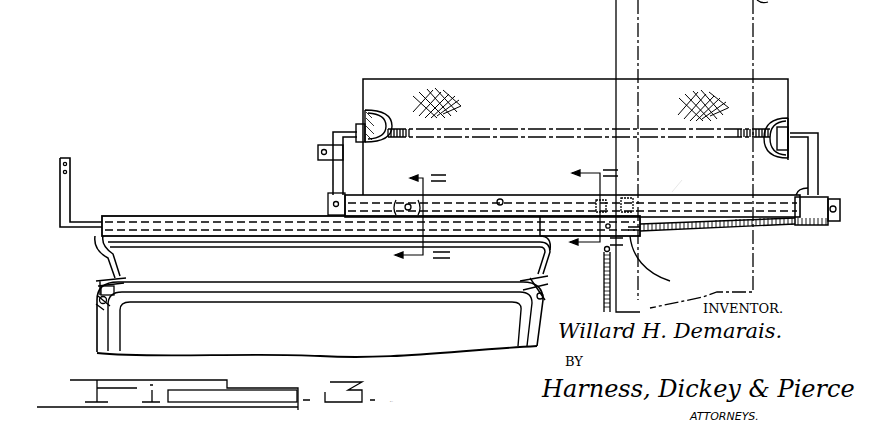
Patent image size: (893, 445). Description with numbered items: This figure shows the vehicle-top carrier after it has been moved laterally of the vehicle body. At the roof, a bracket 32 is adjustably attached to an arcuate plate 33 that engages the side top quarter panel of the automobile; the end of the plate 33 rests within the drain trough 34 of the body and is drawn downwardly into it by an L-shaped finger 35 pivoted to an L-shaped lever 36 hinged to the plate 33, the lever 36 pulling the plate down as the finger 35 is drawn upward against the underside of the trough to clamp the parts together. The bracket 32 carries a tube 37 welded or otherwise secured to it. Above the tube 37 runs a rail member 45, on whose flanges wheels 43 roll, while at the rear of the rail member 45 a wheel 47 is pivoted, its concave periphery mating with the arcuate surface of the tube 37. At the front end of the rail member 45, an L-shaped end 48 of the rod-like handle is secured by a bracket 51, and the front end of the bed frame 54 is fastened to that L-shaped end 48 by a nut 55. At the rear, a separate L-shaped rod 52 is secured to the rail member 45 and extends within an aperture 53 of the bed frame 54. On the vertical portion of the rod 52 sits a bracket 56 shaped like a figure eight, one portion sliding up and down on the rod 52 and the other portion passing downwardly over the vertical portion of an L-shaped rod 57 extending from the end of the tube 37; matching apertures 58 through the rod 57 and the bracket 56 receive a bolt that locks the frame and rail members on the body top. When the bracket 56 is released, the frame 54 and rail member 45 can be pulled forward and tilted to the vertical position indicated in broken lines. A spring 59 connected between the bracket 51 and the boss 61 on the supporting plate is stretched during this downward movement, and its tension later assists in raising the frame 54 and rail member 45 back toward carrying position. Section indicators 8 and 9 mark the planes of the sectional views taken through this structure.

The bracket 32 is at (300, 250).
The plate 33 is at (118, 284).
The drain trough 34 is at (100, 294).
The L-shaped finger 35 is at (97, 312).
The L-shaped lever 36 is at (100, 282).
The tube 37 is at (122, 215).
The wheel 43 is at (625, 188).
The rail member 45 is at (678, 193).
The wheel 47 is at (450, 193).
The L-shaped end 48 is at (812, 132).
The bracket 51 is at (802, 196).
The L-shaped rod 52 is at (333, 172).
The aperture 53 is at (382, 138).
The bed frame 54 is at (363, 113).
The nut 55 is at (775, 118).
The bracket 56 is at (333, 137).
The L-shaped rod 57 is at (70, 191).
The aperture 58 is at (70, 172).
The spring 59 is at (688, 234).
The boss 61 is at (662, 265).
The section line 8- 8 is at (406, 225).
The section line 9- 9 is at (586, 221).